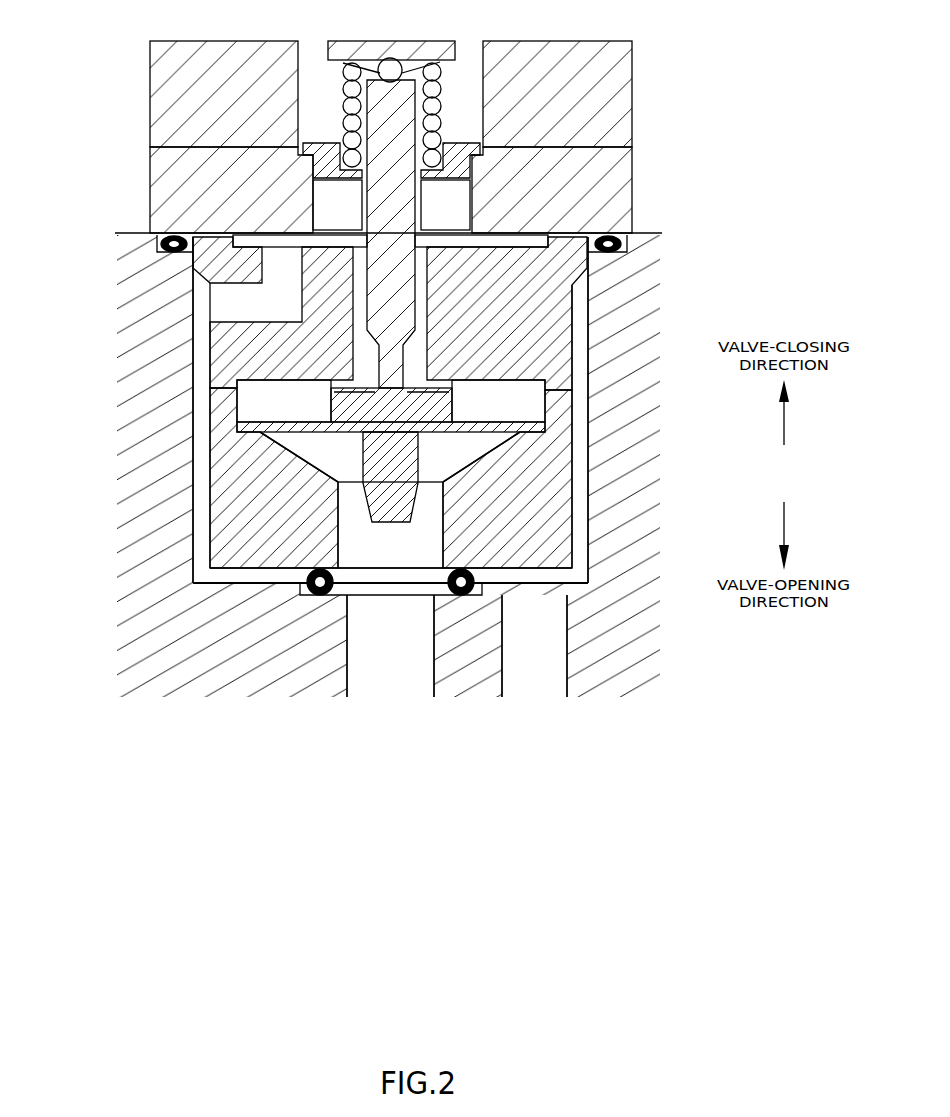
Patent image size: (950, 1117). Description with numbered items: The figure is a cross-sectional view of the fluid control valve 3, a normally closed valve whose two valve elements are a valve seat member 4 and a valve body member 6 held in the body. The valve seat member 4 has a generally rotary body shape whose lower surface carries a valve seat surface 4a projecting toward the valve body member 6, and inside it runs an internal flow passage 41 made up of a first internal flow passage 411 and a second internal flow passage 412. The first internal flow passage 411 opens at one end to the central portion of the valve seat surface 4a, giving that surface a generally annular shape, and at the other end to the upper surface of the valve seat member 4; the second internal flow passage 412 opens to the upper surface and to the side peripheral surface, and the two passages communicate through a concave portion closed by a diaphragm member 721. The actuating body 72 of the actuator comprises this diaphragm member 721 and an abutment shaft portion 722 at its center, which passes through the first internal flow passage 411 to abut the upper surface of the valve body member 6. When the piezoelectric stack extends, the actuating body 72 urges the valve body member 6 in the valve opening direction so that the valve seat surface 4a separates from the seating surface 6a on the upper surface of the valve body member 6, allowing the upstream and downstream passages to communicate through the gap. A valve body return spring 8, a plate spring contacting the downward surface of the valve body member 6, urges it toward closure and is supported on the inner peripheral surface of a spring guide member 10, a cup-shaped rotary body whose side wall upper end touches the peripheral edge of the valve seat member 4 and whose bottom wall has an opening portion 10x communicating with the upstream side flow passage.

The fluid control valve 3 is at (688, 53).
The valve seat member 4 is at (446, 416).
The valve seat surface 4a is at (348, 392).
The valve body member 6 is at (468, 445).
The seating surface 6a is at (352, 380).
The valve body return spring 8 is at (466, 424).
The spring guide member 10 is at (193, 510).
The opening portion 10x is at (424, 563).
The internal flow passage 41 is at (296, 313).
The first internal flow passage 411 is at (358, 345).
The second internal flow passage 412 is at (262, 278).
The actuating body 72 is at (512, 182).
The diaphragm member 721 is at (433, 227).
The abutment shaft portion 722 is at (603, 259).